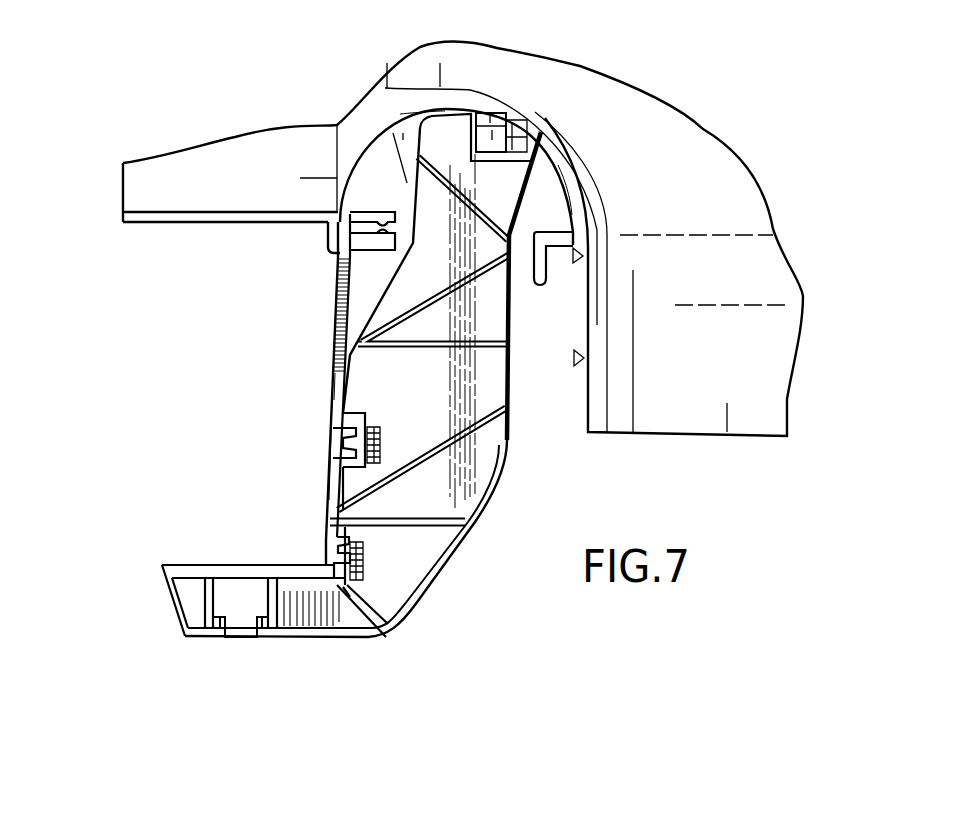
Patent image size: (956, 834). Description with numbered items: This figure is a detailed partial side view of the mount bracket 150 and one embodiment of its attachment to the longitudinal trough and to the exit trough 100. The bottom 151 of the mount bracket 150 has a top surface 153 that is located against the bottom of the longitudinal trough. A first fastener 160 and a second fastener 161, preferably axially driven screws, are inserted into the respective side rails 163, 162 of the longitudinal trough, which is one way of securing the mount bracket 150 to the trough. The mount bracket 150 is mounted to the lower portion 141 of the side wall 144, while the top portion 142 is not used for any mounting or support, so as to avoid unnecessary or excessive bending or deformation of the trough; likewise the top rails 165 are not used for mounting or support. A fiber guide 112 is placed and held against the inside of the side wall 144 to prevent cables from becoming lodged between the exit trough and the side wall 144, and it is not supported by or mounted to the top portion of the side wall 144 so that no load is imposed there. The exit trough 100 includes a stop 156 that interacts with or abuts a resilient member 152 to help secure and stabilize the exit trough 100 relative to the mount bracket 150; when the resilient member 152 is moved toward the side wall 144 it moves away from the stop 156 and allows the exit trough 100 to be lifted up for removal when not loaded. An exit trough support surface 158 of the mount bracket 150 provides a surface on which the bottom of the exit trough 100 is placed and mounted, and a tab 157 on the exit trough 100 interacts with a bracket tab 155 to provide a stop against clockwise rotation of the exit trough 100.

The exit trough 100 is at (587, 108).
The fiber guide 112 is at (330, 236).
The lower portion 141 is at (264, 375).
The top portion 142 is at (281, 216).
The side wall 144 is at (335, 340).
The mount bracket 150 is at (460, 477).
The bottom 151 is at (240, 612).
The resilient member 152 is at (578, 194).
The top surface 153 is at (192, 567).
The bracket tab 155 is at (522, 135).
The stop 156 is at (576, 258).
The tab 157 is at (497, 120).
The exit trough support surface 158 is at (433, 108).
The first fastener 160 is at (382, 440).
The second fastener 161 is at (363, 577).
The side rail 162 is at (333, 572).
The side rail 163 is at (334, 435).
The top rails 165 is at (395, 217).